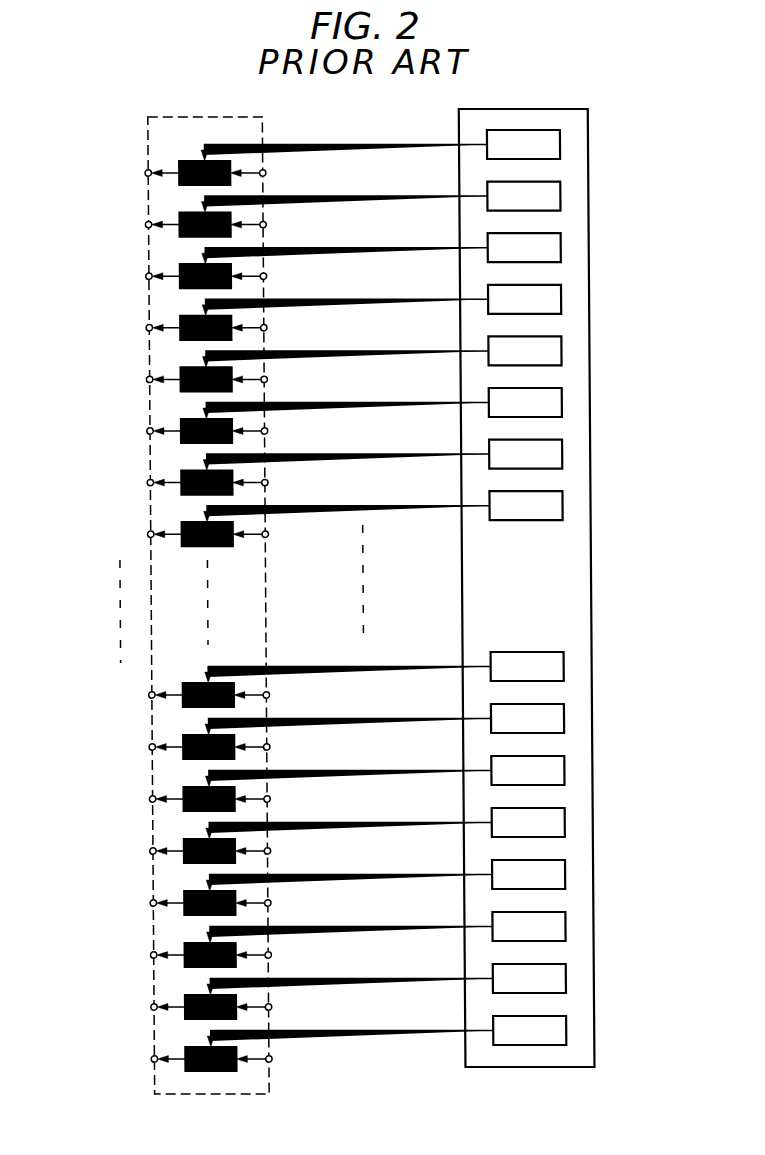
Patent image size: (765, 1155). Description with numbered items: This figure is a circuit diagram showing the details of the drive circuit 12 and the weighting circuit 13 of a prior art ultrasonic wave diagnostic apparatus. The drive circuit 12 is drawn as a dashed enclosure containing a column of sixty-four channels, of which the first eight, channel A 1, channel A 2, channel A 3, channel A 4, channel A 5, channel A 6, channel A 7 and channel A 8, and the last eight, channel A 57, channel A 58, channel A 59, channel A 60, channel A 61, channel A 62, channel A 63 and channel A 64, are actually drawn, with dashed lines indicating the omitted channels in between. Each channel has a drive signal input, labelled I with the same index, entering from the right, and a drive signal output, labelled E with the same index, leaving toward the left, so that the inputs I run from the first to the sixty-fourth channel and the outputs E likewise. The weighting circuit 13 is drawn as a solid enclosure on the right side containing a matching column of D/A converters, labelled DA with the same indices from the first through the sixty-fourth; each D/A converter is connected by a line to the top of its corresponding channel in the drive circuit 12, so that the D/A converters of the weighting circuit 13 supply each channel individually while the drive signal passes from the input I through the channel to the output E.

The drive circuit 12 is at (299, 627).
The weighting circuit 13 is at (527, 1067).
The channel A1 1 is at (296, 166).
The channel A2 2 is at (296, 217).
The channel A3 3 is at (297, 269).
The channel A4 4 is at (297, 320).
The channel A5 5 is at (297, 372).
The channel A6 6 is at (298, 424).
The channel A7 7 is at (298, 475).
The channel A8 8 is at (299, 527).
The channel A57 57 is at (300, 688).
The channel A58 58 is at (300, 740).
The channel A59 59 is at (300, 792).
The channel A60 60 is at (301, 844).
The channel A61 61 is at (301, 896).
The channel A62 62 is at (301, 948).
The channel A63 63 is at (302, 1000).
The channel A64 64 is at (302, 1052).